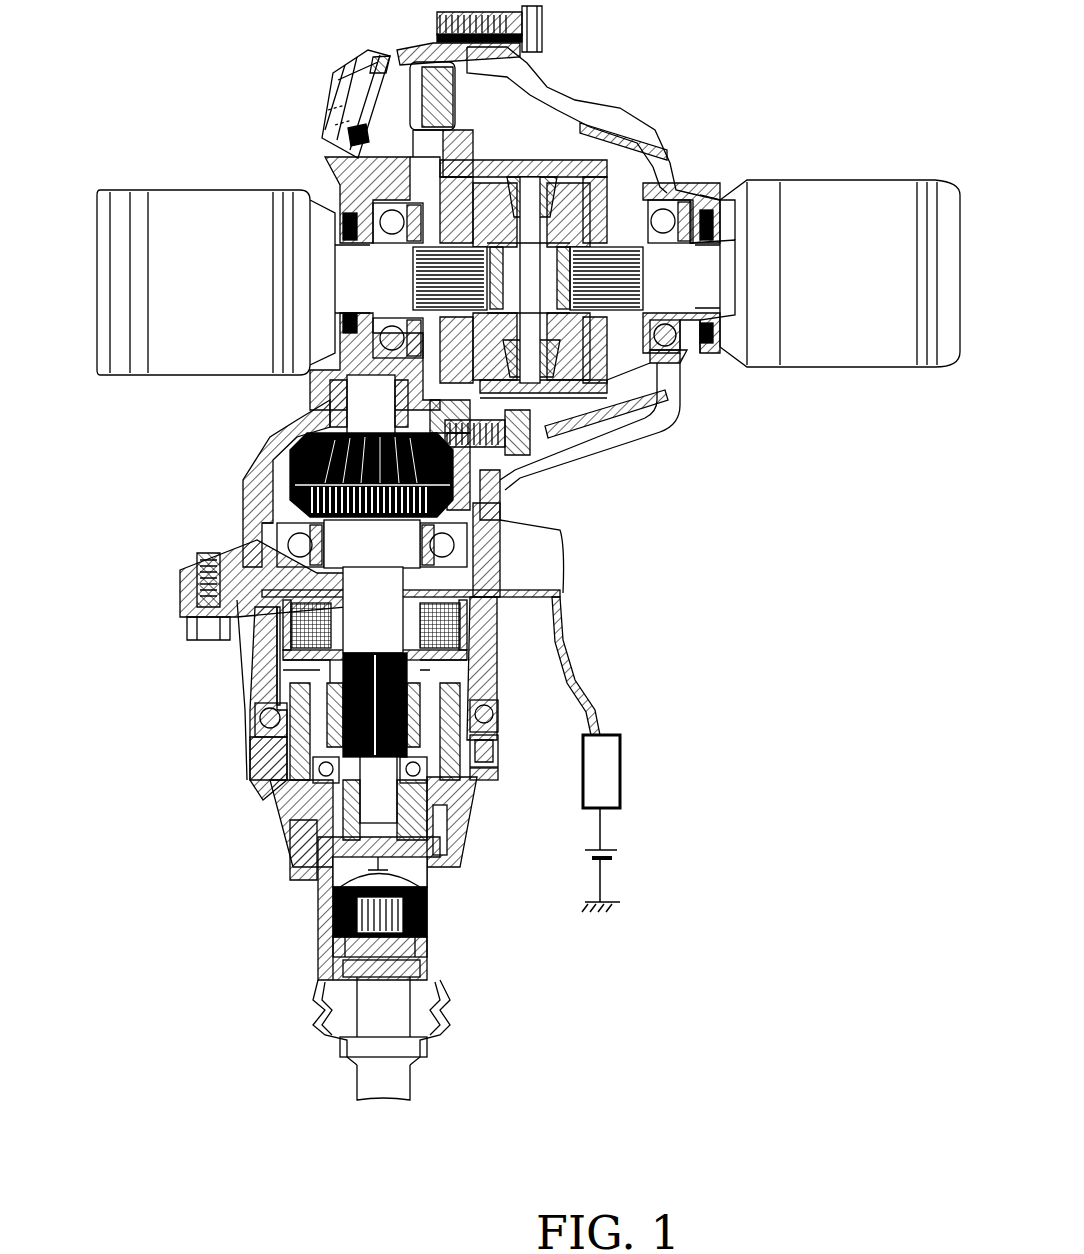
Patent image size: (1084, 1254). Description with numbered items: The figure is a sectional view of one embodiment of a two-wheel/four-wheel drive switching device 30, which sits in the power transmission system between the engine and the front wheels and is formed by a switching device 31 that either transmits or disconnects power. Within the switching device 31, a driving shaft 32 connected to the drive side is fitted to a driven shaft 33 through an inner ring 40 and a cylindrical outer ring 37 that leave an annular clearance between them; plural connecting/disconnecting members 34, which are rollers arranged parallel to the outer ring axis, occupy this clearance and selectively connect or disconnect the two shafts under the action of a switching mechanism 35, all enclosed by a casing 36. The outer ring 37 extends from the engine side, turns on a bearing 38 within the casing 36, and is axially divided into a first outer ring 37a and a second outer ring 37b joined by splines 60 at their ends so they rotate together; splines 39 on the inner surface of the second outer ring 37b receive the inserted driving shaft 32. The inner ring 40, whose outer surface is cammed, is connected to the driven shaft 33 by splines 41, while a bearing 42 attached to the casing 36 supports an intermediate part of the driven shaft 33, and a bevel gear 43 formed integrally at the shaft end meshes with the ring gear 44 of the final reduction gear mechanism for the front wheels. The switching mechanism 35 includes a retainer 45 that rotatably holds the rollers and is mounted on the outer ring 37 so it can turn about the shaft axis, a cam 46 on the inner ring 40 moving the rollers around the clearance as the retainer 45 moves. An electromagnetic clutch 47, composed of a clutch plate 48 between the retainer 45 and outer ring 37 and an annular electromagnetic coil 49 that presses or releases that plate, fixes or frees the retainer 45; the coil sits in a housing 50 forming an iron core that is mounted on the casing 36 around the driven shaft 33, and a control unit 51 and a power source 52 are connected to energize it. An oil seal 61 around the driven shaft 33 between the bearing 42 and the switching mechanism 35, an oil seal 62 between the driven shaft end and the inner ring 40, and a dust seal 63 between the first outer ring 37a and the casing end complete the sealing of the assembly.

The two-wheel/four-wheel drive switching device 30 is at (513, 570).
The switching device 31 is at (483, 796).
The driving shaft 32 is at (400, 1085).
The driven shaft 33 is at (337, 547).
The connecting/disconnecting members 34 is at (462, 714).
The switching mechanism 35 is at (266, 702).
The casing 36 is at (268, 650).
The outer ring 37 is at (455, 910).
The first outer ring 37a is at (447, 860).
The second outer ring 37b is at (525, 878).
The bearing 38 is at (265, 720).
The splines 39 is at (318, 903).
The inner ring 40 is at (303, 822).
The splines 41 is at (360, 655).
The bearing 42 is at (497, 540).
The bevel gear 43 is at (300, 458).
The ring gear 44 is at (513, 477).
The retainer 45 is at (500, 664).
The cam 46 is at (472, 748).
The electromagnetic clutch 47 is at (640, 587).
The clutch plate 48 is at (493, 650).
The electromagnetic coil 49 is at (503, 627).
The housing 50 is at (272, 668).
The control unit 51 is at (600, 774).
The power source 52 is at (620, 856).
The splines 60 is at (290, 858).
The oil seal 61 is at (265, 552).
The oil seal 62 is at (304, 848).
The dust seal 63 is at (485, 790).